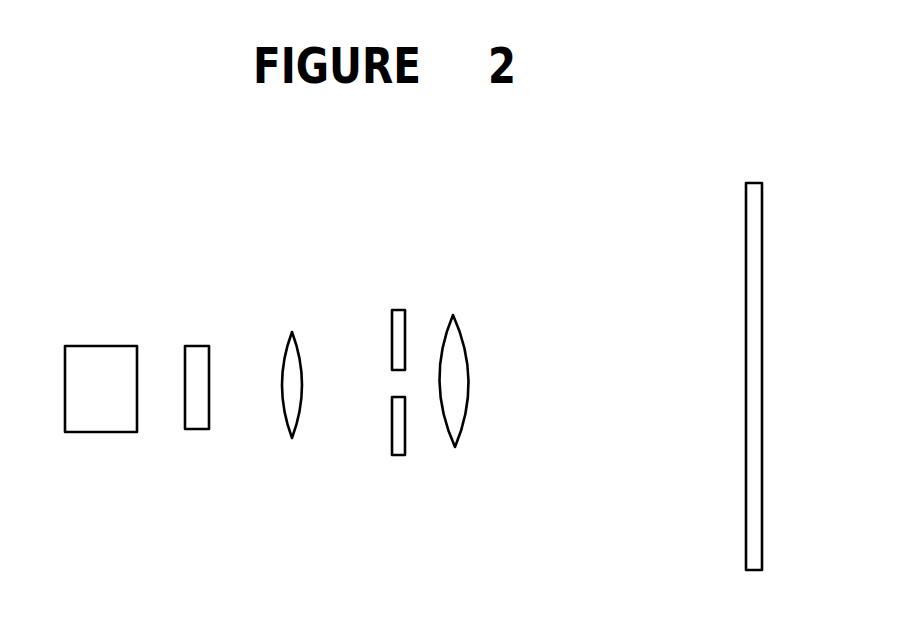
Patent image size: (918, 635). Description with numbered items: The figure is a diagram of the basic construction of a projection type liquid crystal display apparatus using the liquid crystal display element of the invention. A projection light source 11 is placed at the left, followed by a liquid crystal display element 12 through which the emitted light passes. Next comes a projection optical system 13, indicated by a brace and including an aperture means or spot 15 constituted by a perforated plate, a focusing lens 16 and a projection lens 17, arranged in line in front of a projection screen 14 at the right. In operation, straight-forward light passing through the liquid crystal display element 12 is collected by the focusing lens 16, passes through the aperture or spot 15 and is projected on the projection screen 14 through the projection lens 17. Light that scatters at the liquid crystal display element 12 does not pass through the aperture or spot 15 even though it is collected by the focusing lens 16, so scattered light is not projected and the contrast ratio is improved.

The projection light source 11 is at (88, 432).
The liquid crystal display element 12 is at (185, 346).
The projection optical system 13 is at (468, 270).
The projection screen 14 is at (746, 235).
The aperture means or spot 15 is at (392, 450).
The focusing lens 16 is at (292, 438).
The projection lens 17 is at (455, 447).